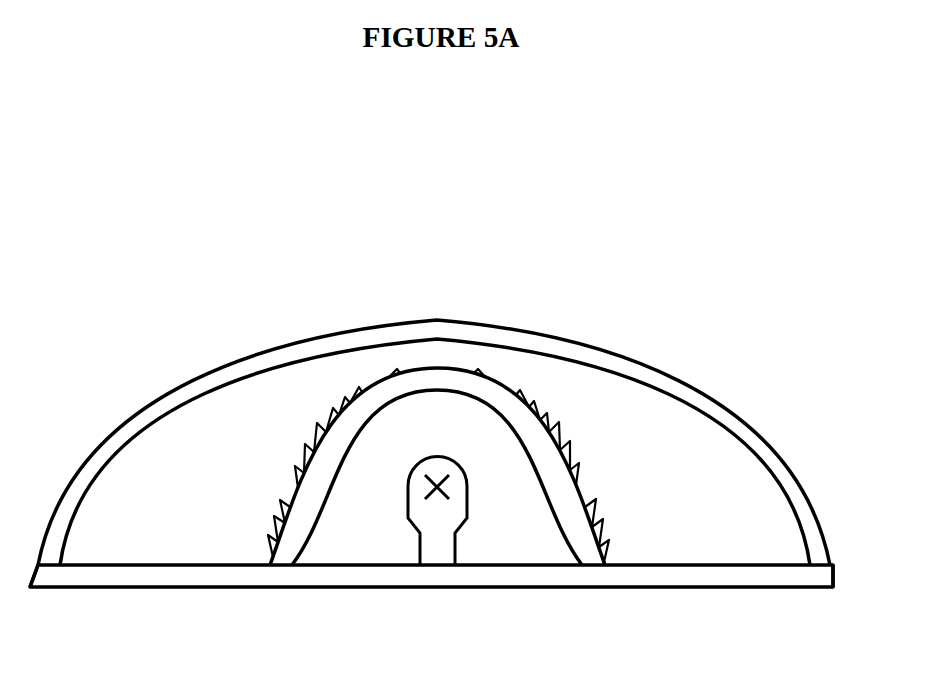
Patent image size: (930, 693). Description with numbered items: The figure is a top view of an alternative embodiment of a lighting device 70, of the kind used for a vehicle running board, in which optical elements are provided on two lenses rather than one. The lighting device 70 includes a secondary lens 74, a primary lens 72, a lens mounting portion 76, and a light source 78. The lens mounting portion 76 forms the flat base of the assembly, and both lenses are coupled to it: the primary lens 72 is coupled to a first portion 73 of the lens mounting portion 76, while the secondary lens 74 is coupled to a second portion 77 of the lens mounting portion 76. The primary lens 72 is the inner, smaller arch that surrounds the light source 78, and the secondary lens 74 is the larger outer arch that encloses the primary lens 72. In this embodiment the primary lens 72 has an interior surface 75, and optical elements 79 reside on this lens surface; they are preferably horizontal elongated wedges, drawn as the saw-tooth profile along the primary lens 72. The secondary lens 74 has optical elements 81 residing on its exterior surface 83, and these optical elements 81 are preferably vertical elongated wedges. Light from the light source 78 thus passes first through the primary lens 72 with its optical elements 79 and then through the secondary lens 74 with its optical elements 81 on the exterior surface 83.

The lighting device 70 is at (640, 298).
The primary lens 72 is at (547, 498).
The first portion 73 is at (838, 579).
The secondary lens 74 is at (386, 321).
The interior surface 75 is at (538, 422).
The lens mounting portion 76 is at (47, 591).
The second portion 77 is at (597, 588).
The light source 78 is at (408, 516).
The optical elements 79 is at (582, 507).
The optical elements 81 is at (165, 408).
The exterior surface 83 is at (695, 410).